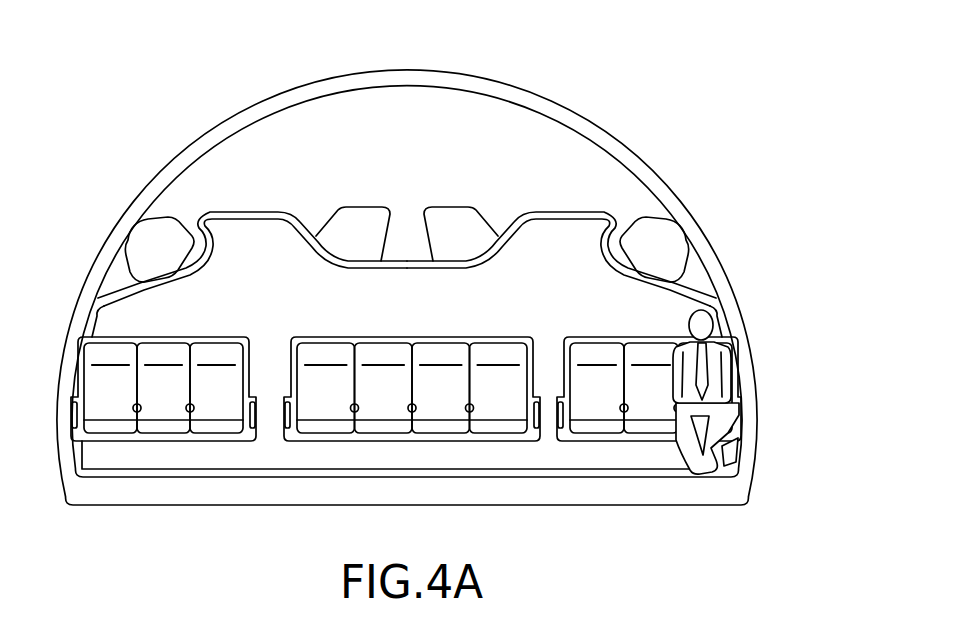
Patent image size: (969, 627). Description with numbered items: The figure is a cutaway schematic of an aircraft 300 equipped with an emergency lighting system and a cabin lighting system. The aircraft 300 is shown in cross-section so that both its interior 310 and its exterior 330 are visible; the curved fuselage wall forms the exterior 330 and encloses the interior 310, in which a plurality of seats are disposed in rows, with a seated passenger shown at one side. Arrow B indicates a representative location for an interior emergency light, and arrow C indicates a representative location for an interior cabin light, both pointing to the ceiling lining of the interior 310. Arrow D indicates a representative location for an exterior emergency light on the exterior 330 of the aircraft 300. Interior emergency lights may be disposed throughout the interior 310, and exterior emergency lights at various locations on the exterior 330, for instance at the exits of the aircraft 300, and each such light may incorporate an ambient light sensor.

The aircraft 300 is at (697, 107).
The exterior 330 is at (104, 243).
The interior 310 is at (427, 308).
The arrow B is at (243, 211).
The arrow C is at (573, 208).
The arrow D is at (727, 278).